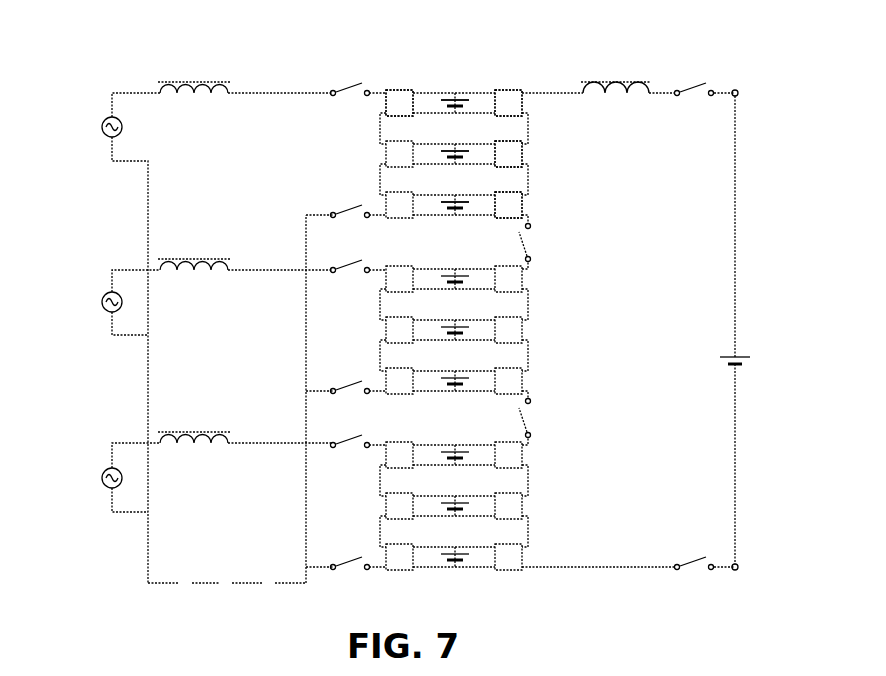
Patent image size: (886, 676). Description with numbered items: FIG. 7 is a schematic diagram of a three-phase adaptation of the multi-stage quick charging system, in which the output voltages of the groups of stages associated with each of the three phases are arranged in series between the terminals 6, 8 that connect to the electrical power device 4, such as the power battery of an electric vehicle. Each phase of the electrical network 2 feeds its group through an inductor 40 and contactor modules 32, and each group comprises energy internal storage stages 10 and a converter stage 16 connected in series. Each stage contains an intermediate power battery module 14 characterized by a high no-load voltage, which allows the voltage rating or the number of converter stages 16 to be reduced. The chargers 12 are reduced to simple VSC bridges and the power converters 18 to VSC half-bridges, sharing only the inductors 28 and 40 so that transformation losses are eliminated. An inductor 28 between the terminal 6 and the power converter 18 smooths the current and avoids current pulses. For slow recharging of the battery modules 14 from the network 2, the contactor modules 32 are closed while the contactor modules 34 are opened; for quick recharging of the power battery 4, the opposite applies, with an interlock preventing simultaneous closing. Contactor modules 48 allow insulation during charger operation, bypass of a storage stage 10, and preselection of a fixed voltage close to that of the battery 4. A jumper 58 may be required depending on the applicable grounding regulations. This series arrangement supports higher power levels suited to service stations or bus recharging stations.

The electrical network 2 is at (105, 470).
The electrical power device 4 is at (738, 357).
The terminal 6 is at (738, 91).
The terminal 8 is at (738, 570).
The energy internal storage stage 10 is at (583, 205).
The charger 12 is at (386, 205).
The intermediate power battery module 14 is at (450, 201).
The converter stage 16 is at (548, 103).
The power converter 18 is at (510, 88).
The inductor 28 is at (622, 82).
The contactor module 32 is at (340, 94).
The contactor module 34 is at (692, 82).
The inductor 40 is at (190, 82).
The contactor module 48 is at (525, 205).
The jumper 58 is at (208, 584).